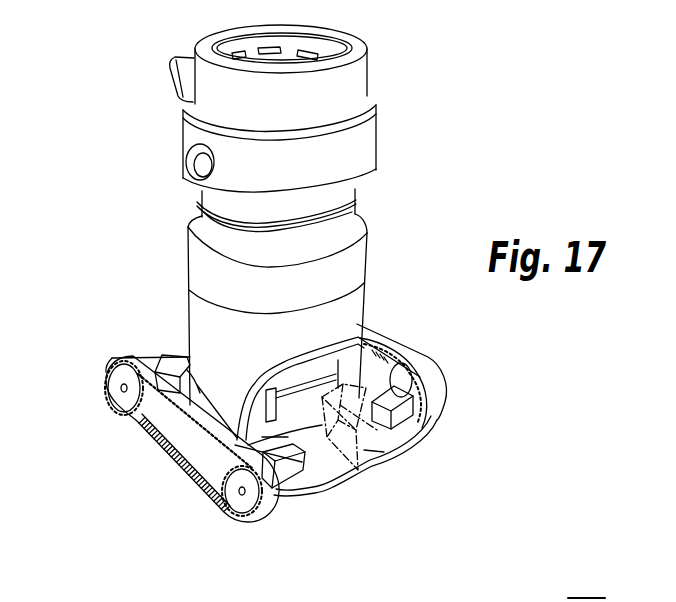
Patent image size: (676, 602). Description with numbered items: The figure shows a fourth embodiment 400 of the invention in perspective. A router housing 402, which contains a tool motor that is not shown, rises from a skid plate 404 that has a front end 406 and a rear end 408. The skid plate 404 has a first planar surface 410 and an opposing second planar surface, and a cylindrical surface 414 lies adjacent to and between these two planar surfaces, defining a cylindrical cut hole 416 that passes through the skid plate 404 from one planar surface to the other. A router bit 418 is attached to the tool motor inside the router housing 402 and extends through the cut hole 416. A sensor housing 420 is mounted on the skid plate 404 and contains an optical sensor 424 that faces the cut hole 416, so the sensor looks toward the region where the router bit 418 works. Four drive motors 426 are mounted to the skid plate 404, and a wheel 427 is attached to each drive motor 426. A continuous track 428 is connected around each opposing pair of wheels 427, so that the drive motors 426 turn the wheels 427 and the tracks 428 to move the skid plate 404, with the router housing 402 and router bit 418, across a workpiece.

The fourth embodiment 400 is at (519, 99).
The router housing 402 is at (367, 152).
The skid plate 404 is at (328, 492).
The front end 406 is at (394, 499).
The rear end 408 is at (111, 297).
The first planar surface 410 is at (338, 483).
The cylindrical surface 414 is at (277, 396).
The cut hole 416 is at (306, 443).
The router bit 418 is at (277, 416).
The sensor housing 420 is at (370, 452).
The optical sensor 424 is at (359, 427).
The drive motor 426 is at (167, 362).
The wheel 427 is at (128, 402).
The continuous track 428 is at (133, 362).